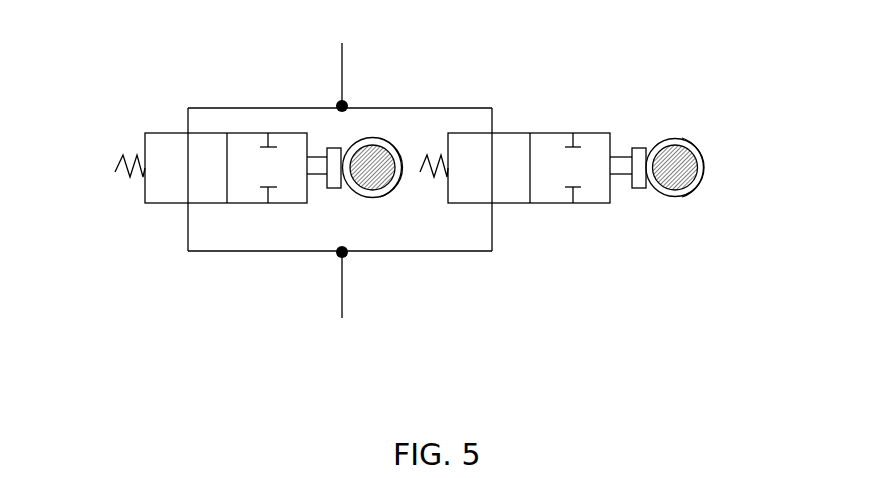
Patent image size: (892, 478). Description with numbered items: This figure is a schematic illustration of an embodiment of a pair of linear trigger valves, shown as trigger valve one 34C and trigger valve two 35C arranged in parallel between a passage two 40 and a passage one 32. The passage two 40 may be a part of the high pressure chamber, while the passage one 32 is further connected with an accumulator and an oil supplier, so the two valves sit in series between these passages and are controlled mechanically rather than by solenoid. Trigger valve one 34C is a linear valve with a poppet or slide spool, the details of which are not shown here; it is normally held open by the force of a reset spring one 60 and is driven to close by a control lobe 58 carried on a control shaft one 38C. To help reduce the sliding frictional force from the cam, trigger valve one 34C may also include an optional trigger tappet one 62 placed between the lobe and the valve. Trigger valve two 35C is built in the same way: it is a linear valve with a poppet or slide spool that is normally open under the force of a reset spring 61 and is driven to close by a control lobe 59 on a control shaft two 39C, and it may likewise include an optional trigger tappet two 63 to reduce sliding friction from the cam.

The passage one 32 is at (345, 283).
The passage two 40 is at (342, 80).
The trigger valve one 34C is at (207, 131).
The trigger valve two 35C is at (528, 122).
The control shaft one 38C is at (368, 145).
The control shaft two 39C is at (670, 142).
The control lobe 58 is at (407, 152).
The control lobe 59 is at (707, 145).
The reset spring one 60 is at (115, 172).
The reset spring 61 is at (428, 180).
The trigger tappet one 62 is at (342, 186).
The trigger tappet two 63 is at (645, 187).